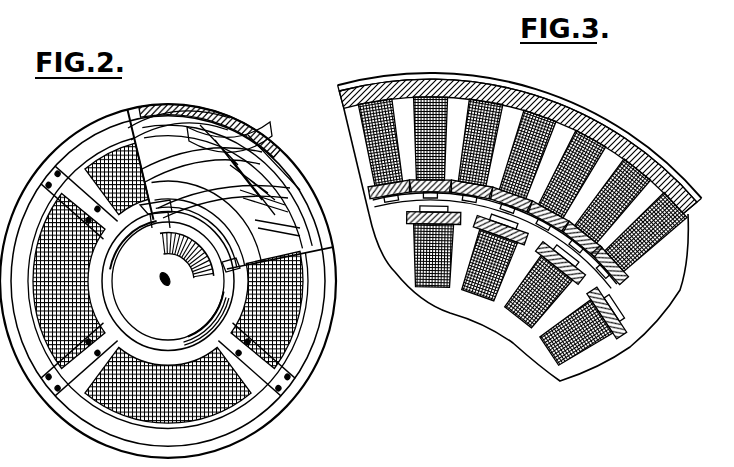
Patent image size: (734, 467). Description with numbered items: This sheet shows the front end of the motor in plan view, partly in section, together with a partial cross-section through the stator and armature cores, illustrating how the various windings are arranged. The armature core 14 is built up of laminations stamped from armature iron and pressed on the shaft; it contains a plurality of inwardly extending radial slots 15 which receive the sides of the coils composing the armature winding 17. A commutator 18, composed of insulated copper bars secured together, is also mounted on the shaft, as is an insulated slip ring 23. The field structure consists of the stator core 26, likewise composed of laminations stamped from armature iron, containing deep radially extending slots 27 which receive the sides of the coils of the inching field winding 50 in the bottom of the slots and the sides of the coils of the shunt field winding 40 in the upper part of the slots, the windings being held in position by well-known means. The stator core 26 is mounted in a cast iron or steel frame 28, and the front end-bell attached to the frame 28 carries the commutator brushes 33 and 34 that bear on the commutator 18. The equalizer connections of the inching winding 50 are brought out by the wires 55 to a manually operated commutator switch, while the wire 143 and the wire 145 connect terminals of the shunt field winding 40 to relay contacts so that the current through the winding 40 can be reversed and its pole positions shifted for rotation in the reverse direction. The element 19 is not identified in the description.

In FIG. 3, the armature core 14 is at (530, 355).
In FIG. 3, the radial slots 15 is at (500, 212).
In FIG. 3, the armature winding 17 is at (420, 255).
In FIG. 2, the commutator 18 is at (206, 319).
In FIG. 2, the shaft 19 is at (166, 285).
In FIG. 2, the insulated slip ring 23 is at (168, 281).
In FIG. 3, the stator core 26 is at (340, 100).
In FIG. 3, the radially extending slots 27 is at (375, 213).
In FIG. 3, the frame 28 is at (575, 97).
In FIG. 2, the commutator brush 33 is at (230, 274).
In FIG. 2, the commutator brush 34 is at (148, 208).
In FIG. 2, the shunt field winding 40 is at (257, 210).
In FIG. 3, the shunt field winding 40 is at (445, 188).
In FIG. 2, the inching field winding 50 is at (200, 113).
In FIG. 3, the inching field winding 50 is at (395, 100).
In FIG. 2, the wires 55 is at (272, 128).
In FIG. 2, the wire 143 is at (275, 197).
In FIG. 2, the wire 145 is at (277, 215).